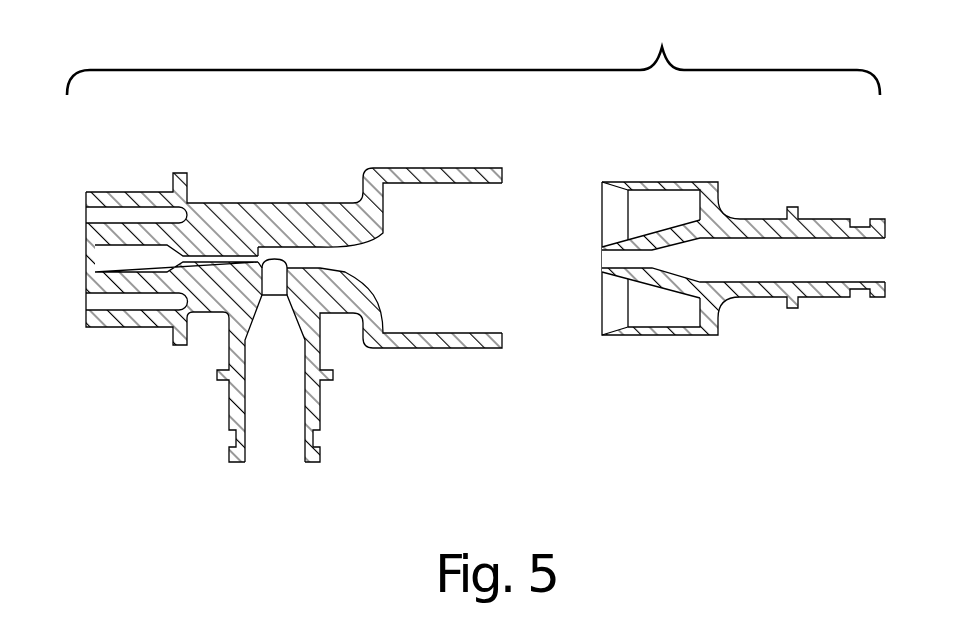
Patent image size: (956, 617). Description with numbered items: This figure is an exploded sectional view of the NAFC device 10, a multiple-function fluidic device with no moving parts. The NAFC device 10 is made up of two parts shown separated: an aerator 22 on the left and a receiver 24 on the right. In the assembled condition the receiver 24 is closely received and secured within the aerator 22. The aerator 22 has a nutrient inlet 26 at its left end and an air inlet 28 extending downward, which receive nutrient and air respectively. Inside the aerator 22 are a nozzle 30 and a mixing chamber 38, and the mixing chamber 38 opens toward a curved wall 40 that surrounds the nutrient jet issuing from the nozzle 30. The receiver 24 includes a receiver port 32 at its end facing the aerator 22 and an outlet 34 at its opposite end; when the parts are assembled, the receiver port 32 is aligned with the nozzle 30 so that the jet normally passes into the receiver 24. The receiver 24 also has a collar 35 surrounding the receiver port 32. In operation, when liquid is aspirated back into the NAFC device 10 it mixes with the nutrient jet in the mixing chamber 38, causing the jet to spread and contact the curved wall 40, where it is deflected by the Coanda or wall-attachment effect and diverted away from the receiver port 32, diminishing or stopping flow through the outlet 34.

The NAFC device 10 is at (473, 58).
The aerator 22 is at (266, 311).
The receiver 24 is at (745, 246).
The nutrient inlet 26 is at (95, 255).
The air inlet 28 is at (277, 437).
The nozzle 30 is at (260, 250).
The receiver port 32 is at (612, 258).
The outlet 34 is at (862, 257).
The collar 35 is at (735, 318).
The mixing chamber 38 is at (288, 261).
The curved wall 40 is at (376, 240).